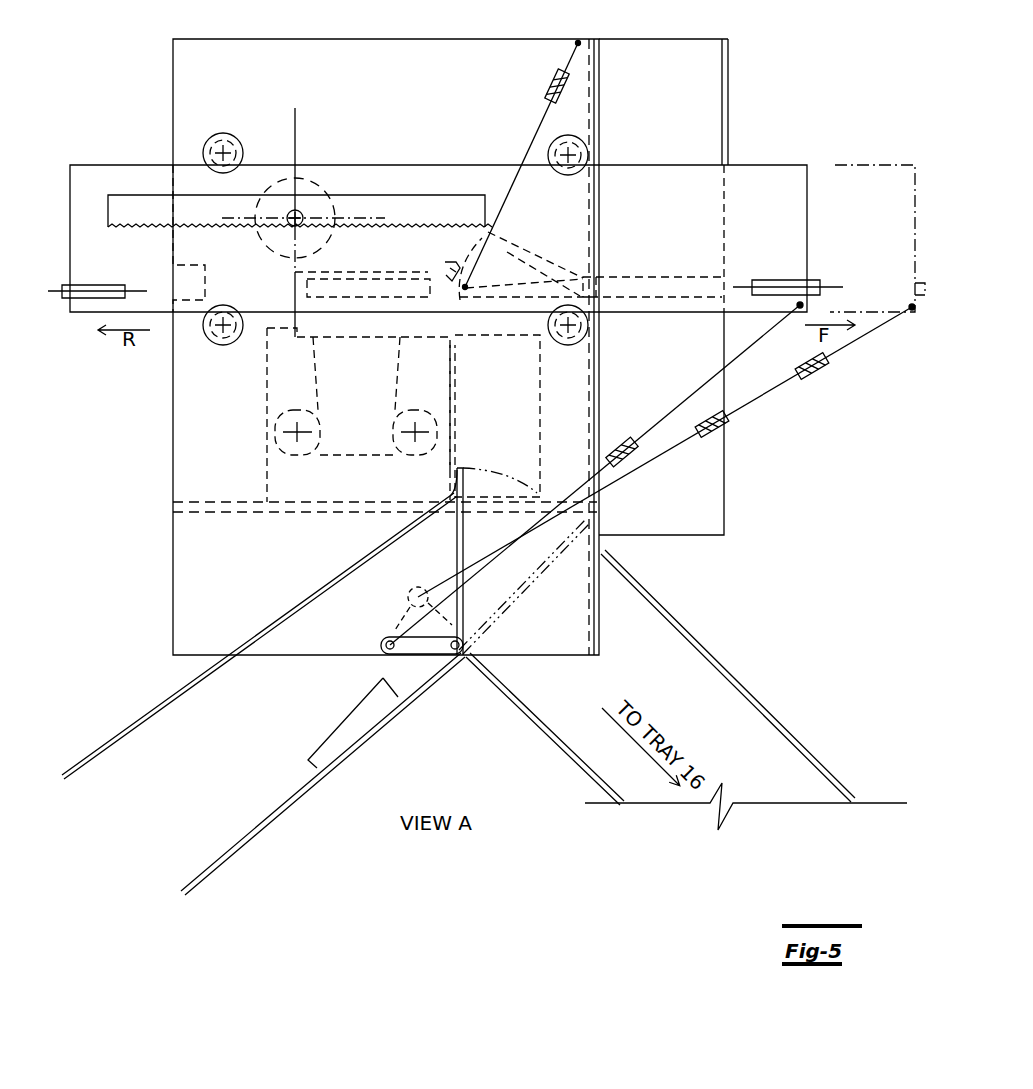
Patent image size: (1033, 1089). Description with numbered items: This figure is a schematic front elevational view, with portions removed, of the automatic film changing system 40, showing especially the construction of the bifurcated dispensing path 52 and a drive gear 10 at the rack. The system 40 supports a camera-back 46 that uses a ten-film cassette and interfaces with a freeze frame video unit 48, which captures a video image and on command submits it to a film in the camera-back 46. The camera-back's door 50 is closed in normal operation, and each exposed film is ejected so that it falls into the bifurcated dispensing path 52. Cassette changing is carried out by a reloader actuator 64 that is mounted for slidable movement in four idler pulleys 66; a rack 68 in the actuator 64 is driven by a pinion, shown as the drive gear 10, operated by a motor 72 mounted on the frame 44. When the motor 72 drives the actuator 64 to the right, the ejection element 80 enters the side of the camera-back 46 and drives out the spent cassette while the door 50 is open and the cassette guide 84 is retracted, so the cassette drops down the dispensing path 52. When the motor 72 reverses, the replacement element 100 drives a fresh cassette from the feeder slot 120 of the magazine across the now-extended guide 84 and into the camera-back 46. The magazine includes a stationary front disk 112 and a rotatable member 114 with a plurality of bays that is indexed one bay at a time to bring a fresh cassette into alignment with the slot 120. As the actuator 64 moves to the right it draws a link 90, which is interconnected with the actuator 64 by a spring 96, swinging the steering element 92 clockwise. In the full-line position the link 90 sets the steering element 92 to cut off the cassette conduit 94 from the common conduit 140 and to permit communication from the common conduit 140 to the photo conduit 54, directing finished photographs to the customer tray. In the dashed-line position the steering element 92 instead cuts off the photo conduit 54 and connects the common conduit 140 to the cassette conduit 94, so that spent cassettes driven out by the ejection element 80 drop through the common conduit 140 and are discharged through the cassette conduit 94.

The automatic film changing system 40 is at (82, 86).
The frame 44 is at (440, 60).
The front disk 112 is at (727, 150).
The rotatable member 114 is at (708, 108).
The reloader actuator 64 is at (90, 170).
The rack 68 is at (138, 230).
The motor 72 is at (305, 185).
The drive gear 10 is at (303, 212).
The idler pulleys 66 is at (236, 140).
The ejection element 80 is at (78, 300).
The camera-back door 50 is at (442, 262).
The cassette guide 84 is at (535, 258).
The feeder slot 120 is at (720, 282).
The replacement element 100 is at (810, 285).
The spring 96 is at (657, 415).
The bifurcated dispensing path 52 is at (555, 420).
The common conduit 140 is at (500, 463).
The camera-back 46 is at (355, 448).
The freeze frame video unit 48 is at (285, 490).
The steering element 92 is at (465, 552).
The link 90 is at (386, 637).
The cassette conduit 94 is at (272, 792).
The photo conduit 54 is at (722, 695).